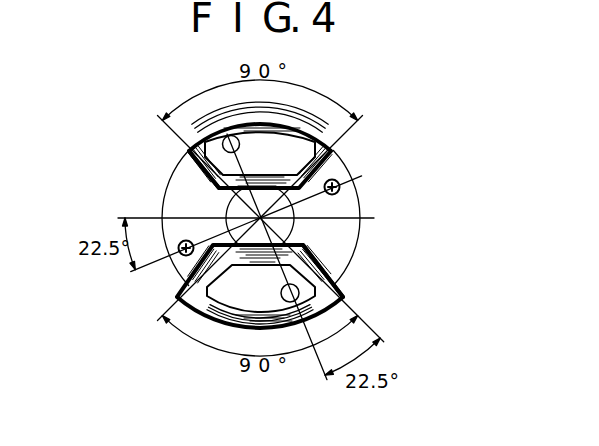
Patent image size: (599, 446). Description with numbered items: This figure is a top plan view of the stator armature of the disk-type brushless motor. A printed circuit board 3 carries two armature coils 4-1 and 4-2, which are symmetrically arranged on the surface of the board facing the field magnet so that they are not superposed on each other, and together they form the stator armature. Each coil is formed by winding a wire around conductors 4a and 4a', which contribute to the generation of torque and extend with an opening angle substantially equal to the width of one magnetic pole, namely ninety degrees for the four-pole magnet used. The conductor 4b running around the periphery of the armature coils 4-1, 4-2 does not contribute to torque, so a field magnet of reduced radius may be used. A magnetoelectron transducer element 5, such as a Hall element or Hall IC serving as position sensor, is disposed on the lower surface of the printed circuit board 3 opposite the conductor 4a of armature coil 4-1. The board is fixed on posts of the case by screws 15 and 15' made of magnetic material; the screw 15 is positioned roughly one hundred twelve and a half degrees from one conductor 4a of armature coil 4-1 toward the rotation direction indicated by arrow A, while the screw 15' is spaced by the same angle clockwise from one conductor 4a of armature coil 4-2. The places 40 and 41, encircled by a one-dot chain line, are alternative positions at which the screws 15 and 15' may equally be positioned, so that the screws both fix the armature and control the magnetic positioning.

The printed circuit board 3 is at (344, 237).
The armature coil 4-1 is at (219, 101).
The armature coil 4-2 is at (213, 333).
The conductor 4a is at (254, 226).
The conductor 4a' is at (252, 228).
The conductor 4b is at (301, 108).
The magnetoelectron transducer element 5 is at (186, 161).
The screw 15 is at (372, 192).
The screw 15' is at (137, 266).
The place 40 is at (225, 142).
The place 41 is at (295, 338).
The arrow A is at (358, 50).